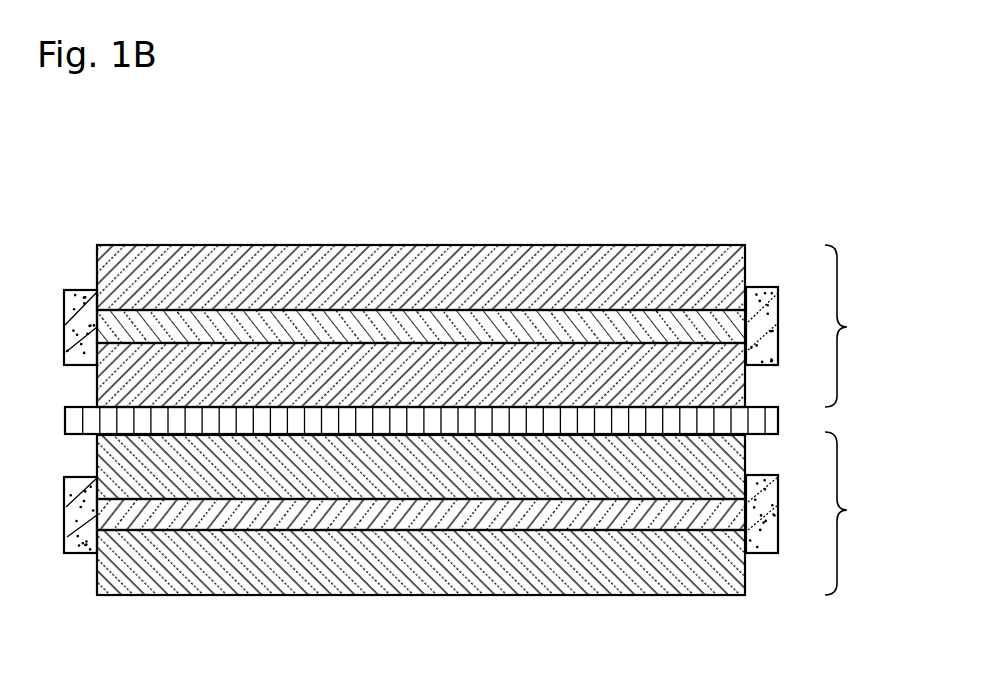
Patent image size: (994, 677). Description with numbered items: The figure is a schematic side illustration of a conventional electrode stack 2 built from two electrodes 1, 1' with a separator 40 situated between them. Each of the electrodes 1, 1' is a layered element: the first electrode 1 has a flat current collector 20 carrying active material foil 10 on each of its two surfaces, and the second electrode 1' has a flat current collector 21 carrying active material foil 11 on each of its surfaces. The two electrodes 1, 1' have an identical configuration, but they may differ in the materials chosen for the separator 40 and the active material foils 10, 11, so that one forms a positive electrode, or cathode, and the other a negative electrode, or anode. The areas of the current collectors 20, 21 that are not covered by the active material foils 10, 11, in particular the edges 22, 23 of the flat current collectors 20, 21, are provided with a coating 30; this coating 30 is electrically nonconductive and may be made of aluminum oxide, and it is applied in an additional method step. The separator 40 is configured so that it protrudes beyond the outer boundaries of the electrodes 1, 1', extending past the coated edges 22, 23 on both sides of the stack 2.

The electrode 1 is at (844, 513).
The electrode 1' is at (846, 326).
The electrode stack 2 is at (676, 173).
The active material foil 10 is at (182, 585).
The active material foil 11 is at (190, 256).
The current collector 20 is at (267, 525).
The current collector 21 is at (262, 320).
The edge 22 is at (65, 518).
The edge 23 is at (63, 338).
The coating 30 is at (63, 323).
The separator 40 is at (773, 412).